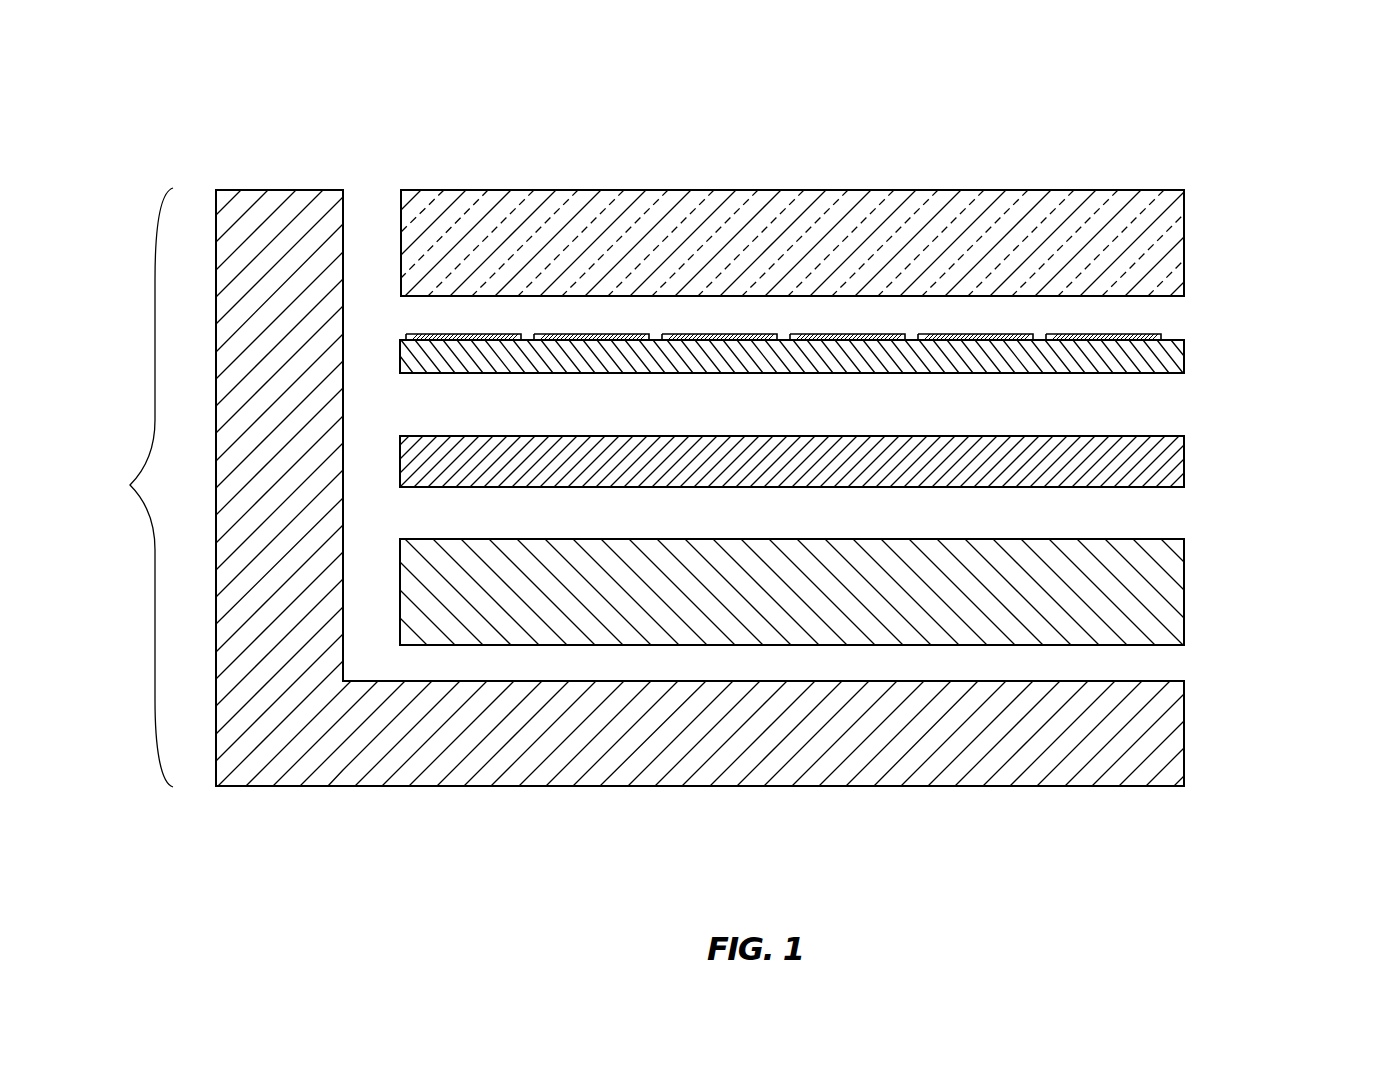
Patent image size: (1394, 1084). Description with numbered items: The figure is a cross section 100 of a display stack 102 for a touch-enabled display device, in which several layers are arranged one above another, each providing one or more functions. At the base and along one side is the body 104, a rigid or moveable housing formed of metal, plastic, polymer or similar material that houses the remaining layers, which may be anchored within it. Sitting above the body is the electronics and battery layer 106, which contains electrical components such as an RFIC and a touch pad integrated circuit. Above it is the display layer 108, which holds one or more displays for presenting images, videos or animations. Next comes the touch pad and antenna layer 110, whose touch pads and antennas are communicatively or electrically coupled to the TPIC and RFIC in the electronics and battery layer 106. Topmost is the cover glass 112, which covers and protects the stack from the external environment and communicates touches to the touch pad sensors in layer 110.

The cross section 100 is at (160, 121).
The display stack 102 is at (130, 487).
The body 104 is at (1184, 728).
The electronics and battery layer 106 is at (1184, 593).
The display layer 108 is at (1184, 462).
The touch pad and antenna layer 110 is at (1184, 355).
The cover glass 112 is at (1184, 233).